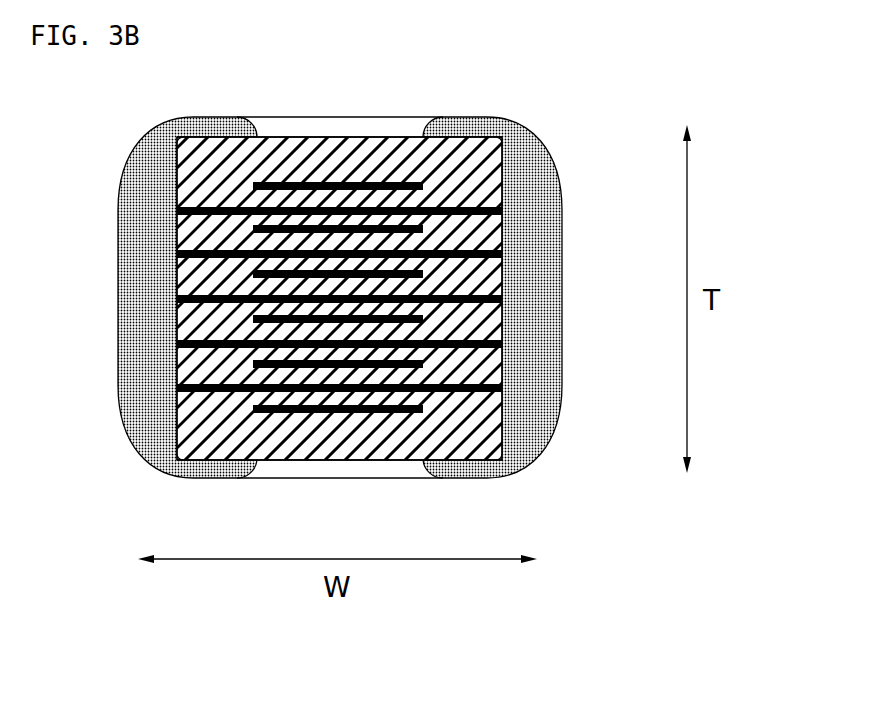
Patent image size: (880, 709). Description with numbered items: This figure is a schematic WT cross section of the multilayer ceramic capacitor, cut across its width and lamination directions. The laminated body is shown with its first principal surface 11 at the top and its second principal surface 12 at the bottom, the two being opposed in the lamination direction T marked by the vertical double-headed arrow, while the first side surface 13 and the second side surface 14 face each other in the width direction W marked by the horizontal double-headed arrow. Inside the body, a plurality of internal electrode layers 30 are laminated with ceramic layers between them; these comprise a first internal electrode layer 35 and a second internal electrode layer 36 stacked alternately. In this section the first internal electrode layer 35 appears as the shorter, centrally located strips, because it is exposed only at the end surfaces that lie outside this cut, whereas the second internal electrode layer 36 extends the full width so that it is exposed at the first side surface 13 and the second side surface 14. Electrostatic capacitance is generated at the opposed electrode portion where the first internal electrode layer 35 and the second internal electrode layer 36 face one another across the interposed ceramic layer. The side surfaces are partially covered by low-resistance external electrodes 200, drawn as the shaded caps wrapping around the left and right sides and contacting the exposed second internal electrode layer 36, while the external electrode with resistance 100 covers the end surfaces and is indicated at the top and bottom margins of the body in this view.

The external electrode with resistance 100 is at (373, 128).
The low-resistance external electrode 200 is at (138, 240).
The first principal surface 11 is at (318, 136).
The second principal surface 12 is at (267, 462).
The first side surface 13 is at (177, 383).
The second side surface 14 is at (502, 383).
The internal electrode layer 30 is at (356, 361).
The first internal electrode layer 35 is at (362, 413).
The second internal electrode layer 36 is at (400, 350).